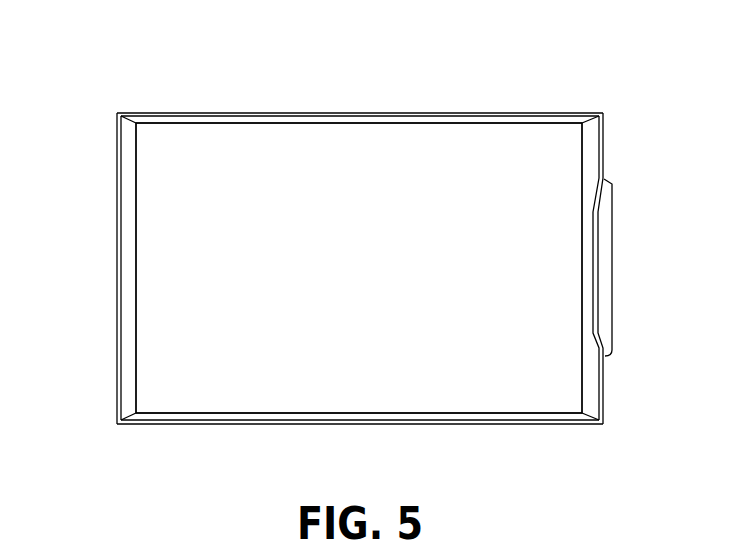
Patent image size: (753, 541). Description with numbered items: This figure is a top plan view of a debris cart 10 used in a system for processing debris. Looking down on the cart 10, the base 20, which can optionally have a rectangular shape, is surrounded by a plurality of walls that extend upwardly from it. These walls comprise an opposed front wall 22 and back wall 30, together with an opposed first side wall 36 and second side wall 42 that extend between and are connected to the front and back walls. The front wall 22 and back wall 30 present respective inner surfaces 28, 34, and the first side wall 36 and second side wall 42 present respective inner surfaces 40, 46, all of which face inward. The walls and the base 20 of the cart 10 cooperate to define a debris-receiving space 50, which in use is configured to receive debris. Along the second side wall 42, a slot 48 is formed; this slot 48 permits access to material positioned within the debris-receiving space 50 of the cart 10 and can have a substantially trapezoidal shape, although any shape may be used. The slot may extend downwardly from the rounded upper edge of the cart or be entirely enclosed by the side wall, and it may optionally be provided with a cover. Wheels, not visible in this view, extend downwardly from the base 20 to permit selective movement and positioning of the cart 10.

The cart 10 is at (162, 48).
The base 20 is at (433, 167).
The front wall 22 is at (247, 427).
The inner surface of front wall 28 is at (385, 410).
The back wall 30 is at (246, 112).
The inner surface of back wall 34 is at (370, 123).
The first side wall 36 is at (117, 190).
The inner surface of first side wall 40 is at (131, 247).
The second side wall 42 is at (605, 385).
The inner surface of second side wall 46 is at (590, 365).
The slot 48 is at (612, 258).
The debris-receiving space 50 is at (368, 282).